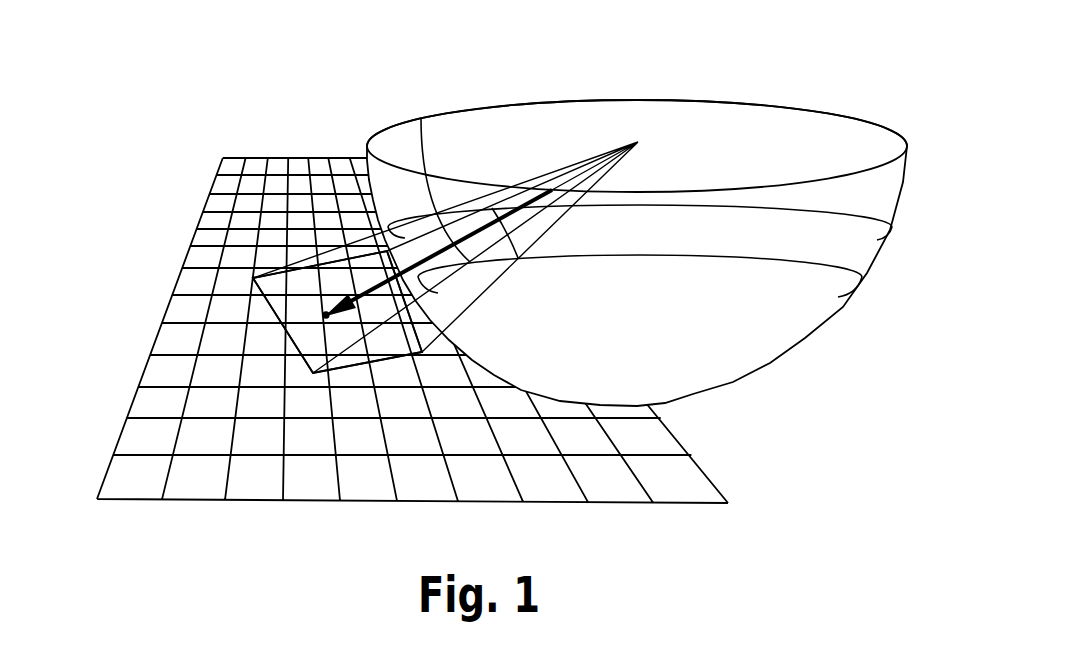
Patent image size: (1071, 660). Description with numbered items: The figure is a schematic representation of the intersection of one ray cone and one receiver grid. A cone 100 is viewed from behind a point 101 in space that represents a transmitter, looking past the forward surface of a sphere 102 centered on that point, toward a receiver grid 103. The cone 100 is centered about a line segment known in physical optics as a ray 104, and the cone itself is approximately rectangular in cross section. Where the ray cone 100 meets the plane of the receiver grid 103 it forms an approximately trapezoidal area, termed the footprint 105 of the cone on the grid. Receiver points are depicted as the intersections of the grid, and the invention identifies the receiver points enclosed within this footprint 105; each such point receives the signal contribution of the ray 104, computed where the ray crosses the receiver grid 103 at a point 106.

The cone 100 is at (318, 268).
The point 101 is at (638, 142).
The sphere 102 is at (548, 330).
The receiver grid 103 is at (209, 195).
The ray 104 is at (421, 118).
The footprint 105 is at (270, 312).
The point 106 is at (327, 314).